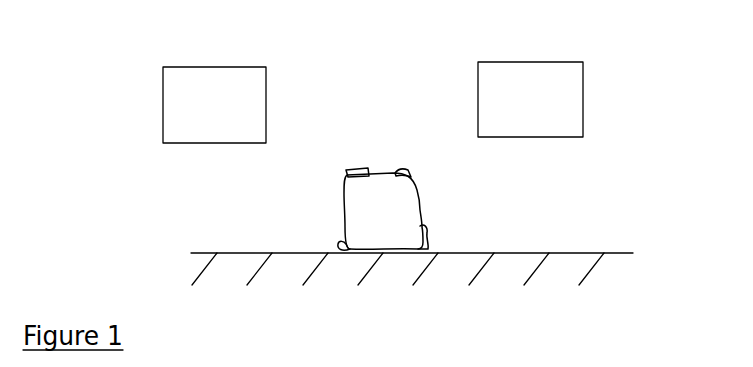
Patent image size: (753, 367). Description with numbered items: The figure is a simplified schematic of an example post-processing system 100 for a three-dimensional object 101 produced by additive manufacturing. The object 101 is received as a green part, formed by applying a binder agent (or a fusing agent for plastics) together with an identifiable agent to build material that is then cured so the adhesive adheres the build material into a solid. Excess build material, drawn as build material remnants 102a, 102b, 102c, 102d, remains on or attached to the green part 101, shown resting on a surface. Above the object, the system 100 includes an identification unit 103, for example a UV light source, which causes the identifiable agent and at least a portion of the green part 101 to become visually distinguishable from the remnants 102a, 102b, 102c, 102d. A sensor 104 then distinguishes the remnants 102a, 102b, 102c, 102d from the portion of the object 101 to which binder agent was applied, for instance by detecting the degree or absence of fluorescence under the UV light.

The post-processing system 100 is at (670, 194).
The three-dimensional object 101 is at (418, 203).
The build material remnant 102a is at (355, 150).
The build material remnant 102b is at (410, 150).
The build material remnant 102c is at (322, 242).
The build material remnant 102d is at (446, 238).
The identification unit 103 is at (214, 105).
The sensor 104 is at (530, 99).